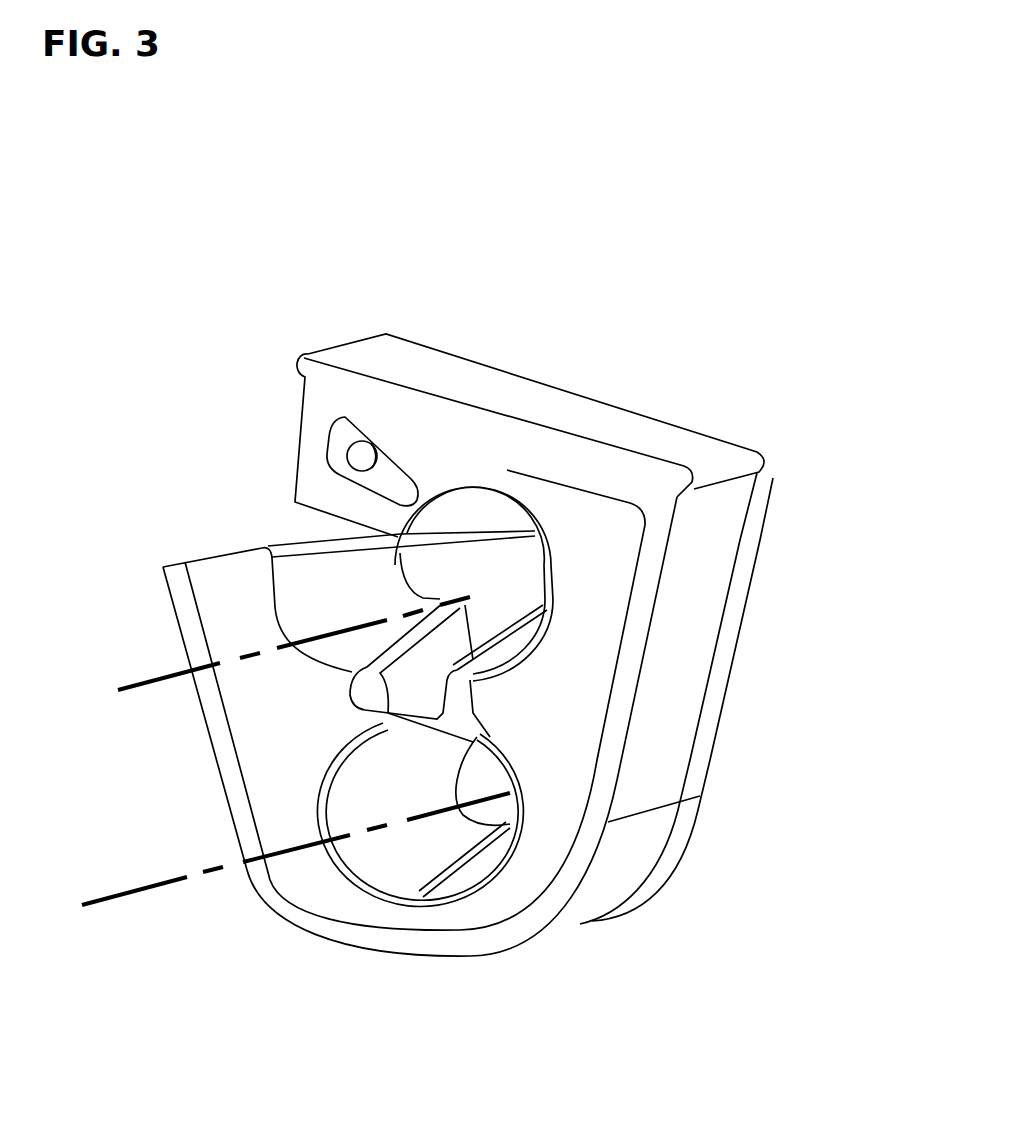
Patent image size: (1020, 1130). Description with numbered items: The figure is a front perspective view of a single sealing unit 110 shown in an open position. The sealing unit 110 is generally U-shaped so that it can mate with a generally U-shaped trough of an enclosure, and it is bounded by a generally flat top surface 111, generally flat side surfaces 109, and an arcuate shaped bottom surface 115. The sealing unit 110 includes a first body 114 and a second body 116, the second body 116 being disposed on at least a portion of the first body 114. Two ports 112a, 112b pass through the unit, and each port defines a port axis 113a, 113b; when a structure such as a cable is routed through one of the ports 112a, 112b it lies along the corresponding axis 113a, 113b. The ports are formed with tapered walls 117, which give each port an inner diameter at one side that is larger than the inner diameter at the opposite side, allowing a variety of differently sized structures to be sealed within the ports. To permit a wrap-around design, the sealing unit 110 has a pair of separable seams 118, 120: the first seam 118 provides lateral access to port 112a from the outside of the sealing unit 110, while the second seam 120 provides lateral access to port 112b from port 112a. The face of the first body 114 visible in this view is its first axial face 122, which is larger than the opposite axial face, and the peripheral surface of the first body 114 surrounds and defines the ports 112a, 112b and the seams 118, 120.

The side surfaces 109 is at (680, 663).
The sealing unit 110 is at (617, 252).
The top surface 111 is at (452, 378).
The port 112a is at (498, 618).
The port 112b is at (453, 828).
The port axis 113a is at (160, 680).
The port axis 113b is at (125, 892).
The first body 114 is at (567, 663).
The bottom surface 115 is at (472, 958).
The second body 116 is at (623, 430).
The tapered walls 117 is at (303, 604).
The first seam 118 is at (322, 506).
The second seam 120 is at (392, 686).
The first axial face 122 is at (562, 770).